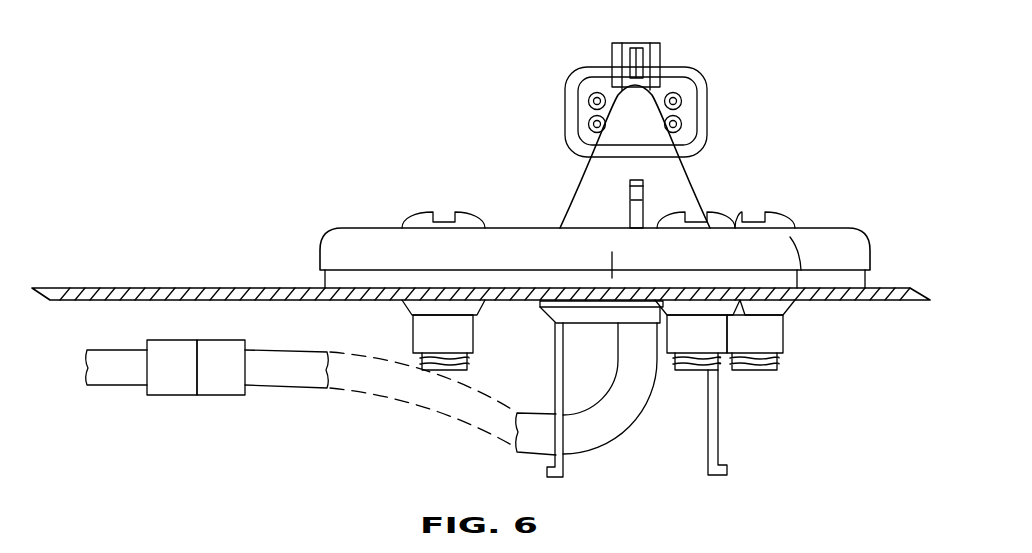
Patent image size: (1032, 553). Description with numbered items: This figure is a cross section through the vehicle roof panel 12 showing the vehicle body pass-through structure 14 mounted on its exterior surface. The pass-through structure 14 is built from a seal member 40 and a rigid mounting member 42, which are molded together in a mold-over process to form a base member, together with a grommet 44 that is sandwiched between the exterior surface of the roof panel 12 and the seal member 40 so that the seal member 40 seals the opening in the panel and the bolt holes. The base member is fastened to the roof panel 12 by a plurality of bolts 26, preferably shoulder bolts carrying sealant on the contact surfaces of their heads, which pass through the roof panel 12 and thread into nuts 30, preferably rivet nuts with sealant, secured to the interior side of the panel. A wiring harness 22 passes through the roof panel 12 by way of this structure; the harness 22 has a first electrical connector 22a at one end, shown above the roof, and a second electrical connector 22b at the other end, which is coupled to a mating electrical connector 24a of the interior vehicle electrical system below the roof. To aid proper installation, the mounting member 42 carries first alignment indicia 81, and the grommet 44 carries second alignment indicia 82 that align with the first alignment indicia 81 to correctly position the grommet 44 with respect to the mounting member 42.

The vehicle roof panel 12 is at (108, 288).
The vehicle body pass-through structure 14 is at (742, 158).
The wiring harness 22 is at (624, 438).
The first electrical connector 22a is at (673, 70).
The second electrical connector 22b is at (225, 395).
The mating electrical connector 24a is at (172, 395).
The bolts 26 is at (415, 212).
The nuts 30 is at (477, 333).
The seal member 40 is at (326, 243).
The rigid mounting member 42 is at (322, 280).
The grommet 44 is at (582, 173).
The first alignment indicia 81 is at (646, 224).
The second alignment indicia 82 is at (630, 200).